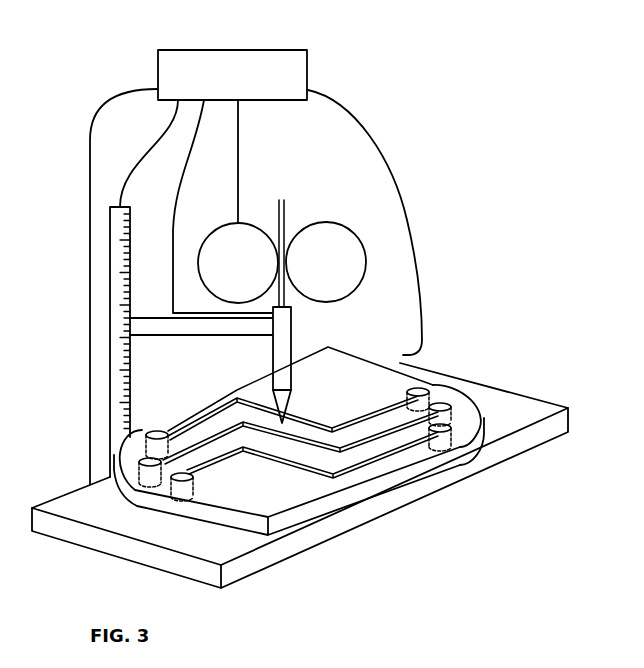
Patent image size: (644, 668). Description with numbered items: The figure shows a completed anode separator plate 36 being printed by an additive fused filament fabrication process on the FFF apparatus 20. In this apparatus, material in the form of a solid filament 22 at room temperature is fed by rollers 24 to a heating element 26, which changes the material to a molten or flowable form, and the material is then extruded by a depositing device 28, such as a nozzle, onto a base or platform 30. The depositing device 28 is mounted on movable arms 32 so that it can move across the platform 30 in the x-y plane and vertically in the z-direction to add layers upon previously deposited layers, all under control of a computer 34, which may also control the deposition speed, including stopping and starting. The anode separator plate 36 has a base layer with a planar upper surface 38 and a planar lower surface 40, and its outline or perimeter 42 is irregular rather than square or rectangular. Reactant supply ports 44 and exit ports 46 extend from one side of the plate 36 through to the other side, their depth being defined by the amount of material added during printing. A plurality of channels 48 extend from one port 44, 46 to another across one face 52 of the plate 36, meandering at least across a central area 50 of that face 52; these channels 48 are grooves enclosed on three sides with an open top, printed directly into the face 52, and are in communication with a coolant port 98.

The FFF apparatus 20 is at (453, 146).
The solid filament 22 is at (286, 292).
The rollers 24 is at (224, 224).
The heating element 26 is at (291, 313).
The depositing device 28 is at (268, 382).
The platform 30 is at (300, 465).
The movable arms 32 is at (110, 243).
The computer 34 is at (297, 48).
The anode separator plate 36 is at (313, 379).
The planar upper surface 38 is at (329, 441).
The planar lower surface 40 is at (373, 490).
The perimeter 42 is at (482, 424).
The reactant supply port 44 is at (182, 490).
The reactant exit port 46 is at (157, 430).
The channels 48 is at (245, 407).
The central area 50 is at (309, 483).
The face 52 is at (338, 410).
The coolant port 98 is at (115, 457).